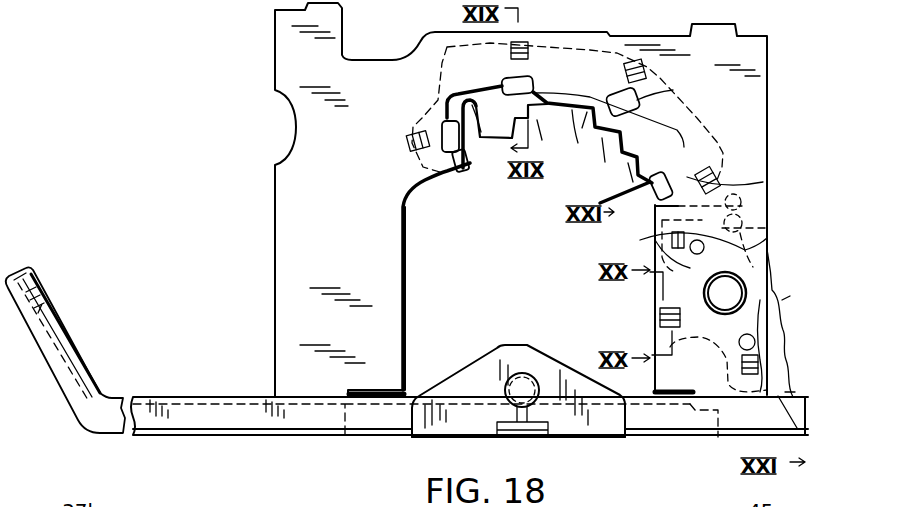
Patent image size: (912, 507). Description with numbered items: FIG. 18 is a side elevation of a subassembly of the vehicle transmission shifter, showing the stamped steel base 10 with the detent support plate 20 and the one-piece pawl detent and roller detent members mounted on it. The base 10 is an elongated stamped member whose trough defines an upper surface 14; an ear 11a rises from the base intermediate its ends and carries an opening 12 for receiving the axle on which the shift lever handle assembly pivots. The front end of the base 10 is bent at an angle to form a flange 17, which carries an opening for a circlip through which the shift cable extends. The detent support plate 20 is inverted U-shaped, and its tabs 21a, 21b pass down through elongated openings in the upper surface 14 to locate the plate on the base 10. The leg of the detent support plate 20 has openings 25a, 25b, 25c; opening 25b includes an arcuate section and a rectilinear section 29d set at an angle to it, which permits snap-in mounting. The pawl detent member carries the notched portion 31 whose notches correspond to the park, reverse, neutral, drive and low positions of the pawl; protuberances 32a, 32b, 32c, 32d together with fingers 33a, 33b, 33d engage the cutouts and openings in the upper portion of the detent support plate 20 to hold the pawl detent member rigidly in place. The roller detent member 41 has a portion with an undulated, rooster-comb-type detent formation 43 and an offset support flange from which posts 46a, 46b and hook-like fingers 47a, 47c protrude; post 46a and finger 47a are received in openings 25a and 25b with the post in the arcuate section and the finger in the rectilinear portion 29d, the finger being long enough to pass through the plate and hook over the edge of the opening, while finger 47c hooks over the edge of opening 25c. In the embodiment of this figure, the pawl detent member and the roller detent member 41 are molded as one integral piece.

The base 10 is at (231, 414).
The ear 11a is at (594, 438).
The opening 12 is at (486, 379).
The upper surface 14 is at (190, 397).
The flange 17 is at (81, 366).
The detent support plate 20 is at (777, 168).
The tab 21a is at (332, 437).
The tab 21b is at (716, 438).
The opening 25a is at (721, 286).
The opening 25b is at (758, 365).
The opening 25c is at (672, 340).
The rectilinear section 29d is at (787, 391).
The detent gate 31 is at (487, 94).
The protuberance 32a is at (463, 171).
The protuberance 32b is at (540, 78).
The protuberance 32c is at (668, 92).
The protuberance 32d is at (695, 152).
The finger 33a is at (410, 150).
The finger 33b is at (522, 42).
The finger 33d is at (720, 182).
The roller detent member 41 is at (787, 294).
The detent formation 43 is at (783, 317).
The post 46a is at (768, 245).
The post 46b is at (755, 342).
The hook-like finger 47a is at (672, 240).
The hook-like finger 47c is at (660, 316).